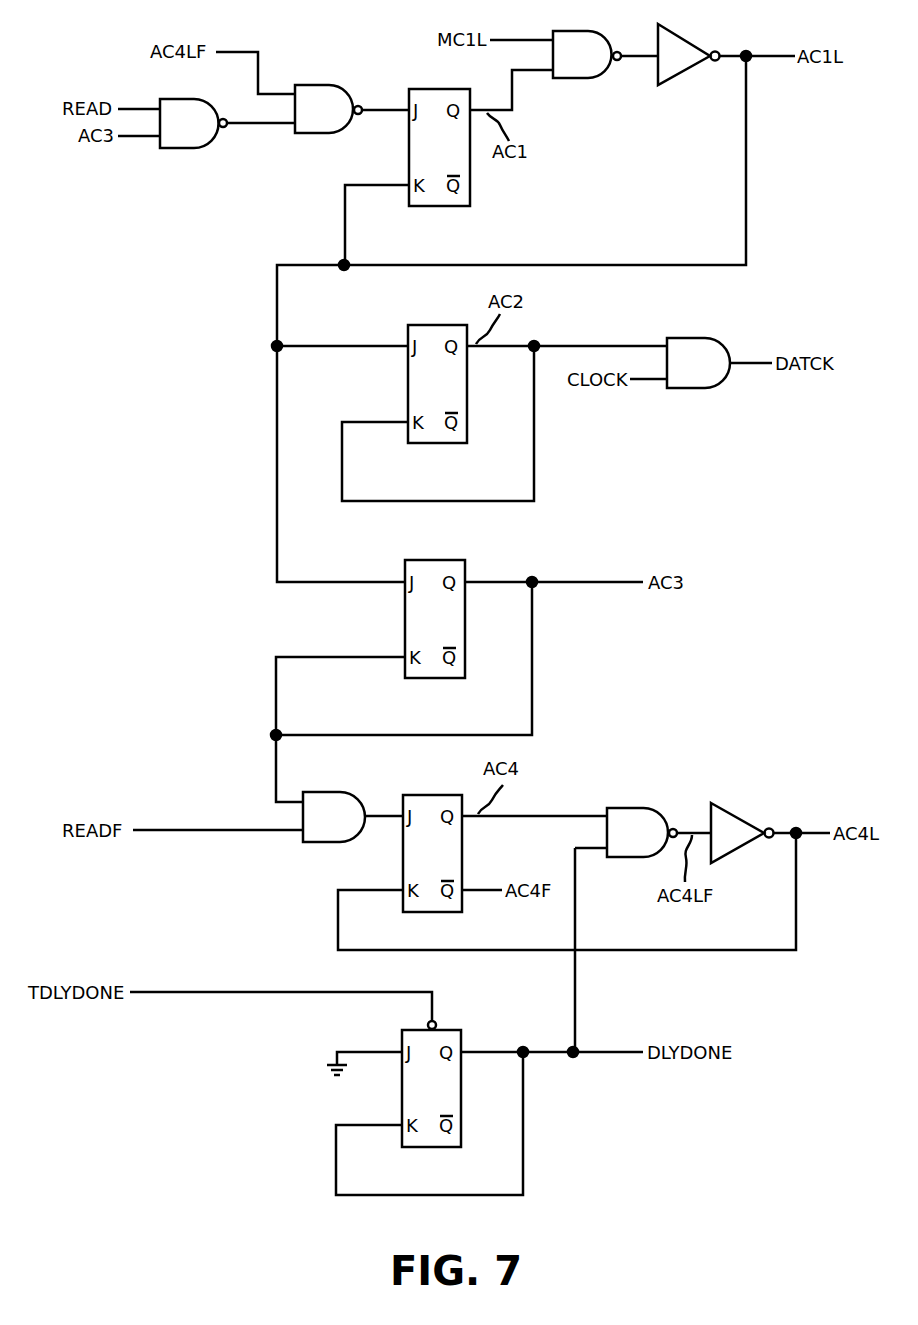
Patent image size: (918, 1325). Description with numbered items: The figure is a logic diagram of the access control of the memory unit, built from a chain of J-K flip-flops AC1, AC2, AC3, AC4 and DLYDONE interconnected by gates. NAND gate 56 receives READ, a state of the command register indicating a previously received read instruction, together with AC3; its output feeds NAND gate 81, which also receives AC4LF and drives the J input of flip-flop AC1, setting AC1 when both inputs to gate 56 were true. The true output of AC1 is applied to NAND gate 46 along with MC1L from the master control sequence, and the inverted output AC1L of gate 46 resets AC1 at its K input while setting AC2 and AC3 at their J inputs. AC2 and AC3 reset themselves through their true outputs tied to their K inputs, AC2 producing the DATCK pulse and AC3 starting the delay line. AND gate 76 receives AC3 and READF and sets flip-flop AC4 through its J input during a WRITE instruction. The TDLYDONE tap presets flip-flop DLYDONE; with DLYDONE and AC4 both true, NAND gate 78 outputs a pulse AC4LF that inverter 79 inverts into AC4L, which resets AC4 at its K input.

The NAND gate 56 is at (193, 148).
The NAND gate 81 is at (323, 85).
The NAND gate 46 is at (580, 78).
The AND gate 76 is at (335, 792).
The NAND gate 78 is at (637, 808).
The inverter 79 is at (740, 803).